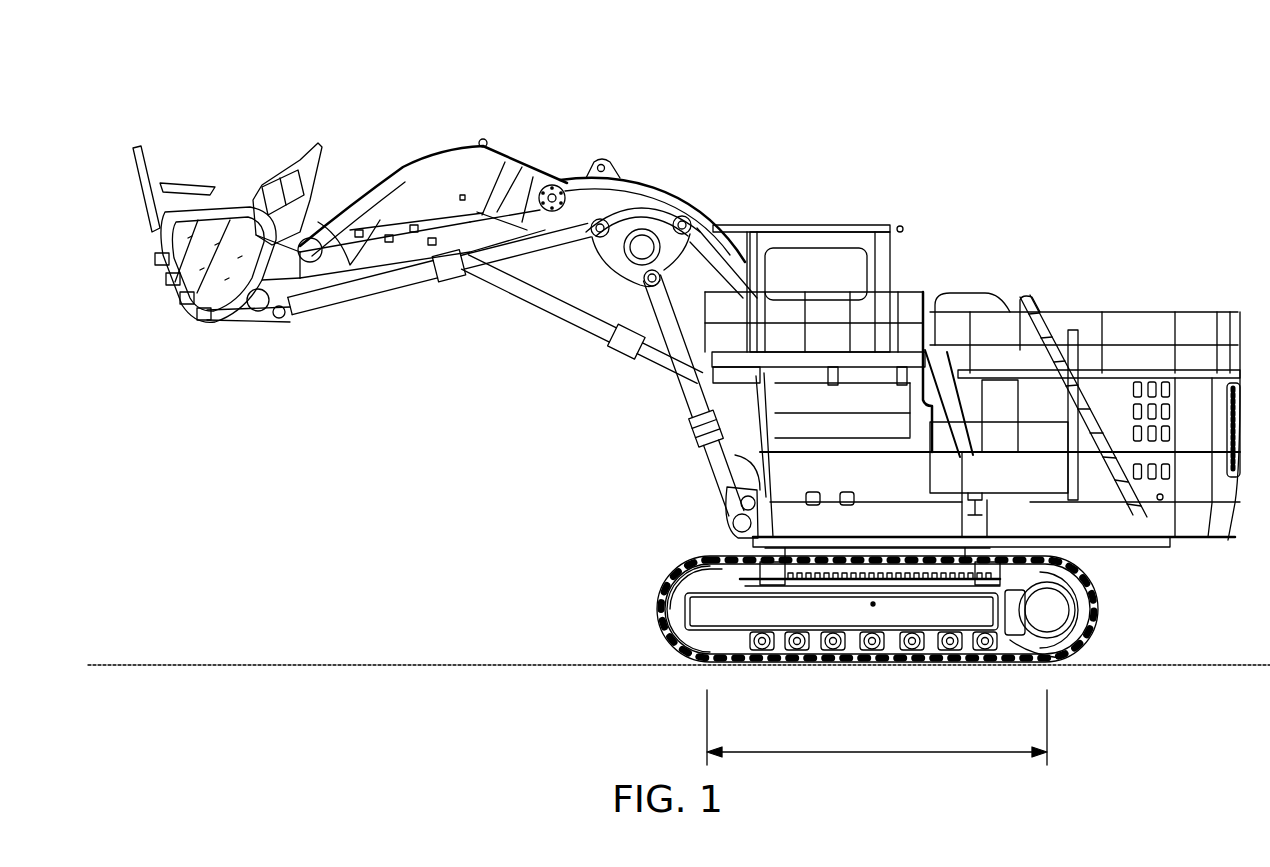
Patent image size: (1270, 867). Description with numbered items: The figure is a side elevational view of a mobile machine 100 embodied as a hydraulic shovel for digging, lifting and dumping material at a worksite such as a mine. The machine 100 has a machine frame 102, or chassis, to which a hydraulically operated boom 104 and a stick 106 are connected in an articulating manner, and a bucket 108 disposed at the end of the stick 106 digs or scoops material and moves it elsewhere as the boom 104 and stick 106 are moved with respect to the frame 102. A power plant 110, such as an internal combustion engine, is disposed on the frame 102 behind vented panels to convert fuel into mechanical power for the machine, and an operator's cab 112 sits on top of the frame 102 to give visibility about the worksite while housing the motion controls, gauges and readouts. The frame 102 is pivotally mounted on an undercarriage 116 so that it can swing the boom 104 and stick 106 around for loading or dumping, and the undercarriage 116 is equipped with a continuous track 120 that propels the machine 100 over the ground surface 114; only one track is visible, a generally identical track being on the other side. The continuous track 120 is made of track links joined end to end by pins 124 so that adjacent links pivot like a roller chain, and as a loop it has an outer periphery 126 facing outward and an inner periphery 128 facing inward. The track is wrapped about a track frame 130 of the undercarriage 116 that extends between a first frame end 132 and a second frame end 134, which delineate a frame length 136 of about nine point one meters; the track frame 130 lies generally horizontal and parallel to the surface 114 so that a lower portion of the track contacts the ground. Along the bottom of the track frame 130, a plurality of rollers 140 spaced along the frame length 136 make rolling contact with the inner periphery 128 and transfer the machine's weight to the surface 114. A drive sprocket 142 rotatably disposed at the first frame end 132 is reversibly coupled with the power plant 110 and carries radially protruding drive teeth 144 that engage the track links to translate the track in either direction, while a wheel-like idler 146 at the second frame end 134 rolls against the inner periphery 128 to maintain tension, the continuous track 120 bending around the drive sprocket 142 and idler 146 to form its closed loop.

The machine 100 is at (864, 107).
The machine frame 102 is at (937, 345).
The boom 104 is at (660, 183).
The stick 106 is at (455, 168).
The bucket 108 is at (245, 203).
The power plant 110 is at (1147, 380).
The operator's cab 112 is at (790, 232).
The surface 114 is at (1190, 663).
The undercarriage 116 is at (1130, 590).
The continuous track 120 is at (635, 622).
The pins 124 is at (707, 662).
The outer periphery 126 is at (673, 562).
The inner periphery 128 is at (705, 580).
The track frame 130 is at (873, 606).
The first frame end 132 is at (1027, 640).
The second frame end 134 is at (707, 610).
The frame length 136 is at (877, 735).
The rollers 140 is at (822, 650).
The drive sprocket 142 is at (1055, 610).
The drive teeth 144 is at (1040, 567).
The idler 146 is at (665, 600).